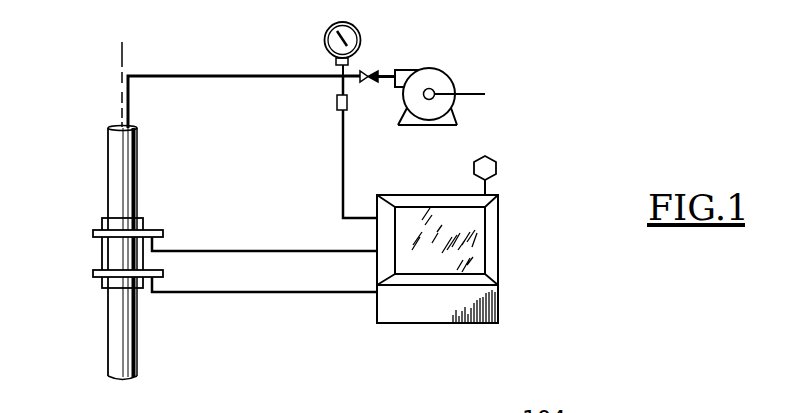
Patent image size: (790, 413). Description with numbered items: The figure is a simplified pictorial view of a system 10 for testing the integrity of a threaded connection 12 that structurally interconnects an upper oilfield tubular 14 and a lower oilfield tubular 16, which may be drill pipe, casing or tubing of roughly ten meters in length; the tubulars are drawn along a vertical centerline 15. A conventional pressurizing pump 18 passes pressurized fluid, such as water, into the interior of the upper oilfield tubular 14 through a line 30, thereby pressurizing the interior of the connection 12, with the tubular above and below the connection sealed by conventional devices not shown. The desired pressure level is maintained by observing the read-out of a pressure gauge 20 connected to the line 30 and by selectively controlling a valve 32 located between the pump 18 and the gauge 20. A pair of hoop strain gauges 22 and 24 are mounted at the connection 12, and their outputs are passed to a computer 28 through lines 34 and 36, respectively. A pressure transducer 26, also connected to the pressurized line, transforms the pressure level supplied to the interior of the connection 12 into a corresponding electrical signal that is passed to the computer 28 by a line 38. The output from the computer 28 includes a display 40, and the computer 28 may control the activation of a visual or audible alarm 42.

The system 10 is at (220, 327).
The threaded connection 12 is at (100, 255).
The upper oilfield tubular 14 is at (137, 163).
The centerline 15 is at (122, 64).
The lower oilfield tubular 16 is at (107, 347).
The pressurizing pump 18 is at (423, 68).
The pressure gauge 20 is at (330, 26).
The hoop strain gauge 22 is at (160, 232).
The hoop strain gauge 24 is at (100, 273).
The pressure transducer 26 is at (337, 103).
The computer 28 is at (425, 198).
The line 30 is at (240, 76).
The valve 32 is at (367, 72).
The line 34 is at (250, 251).
The line 36 is at (272, 292).
The line 38 is at (342, 163).
The display 40 is at (475, 235).
The alarm 42 is at (497, 163).